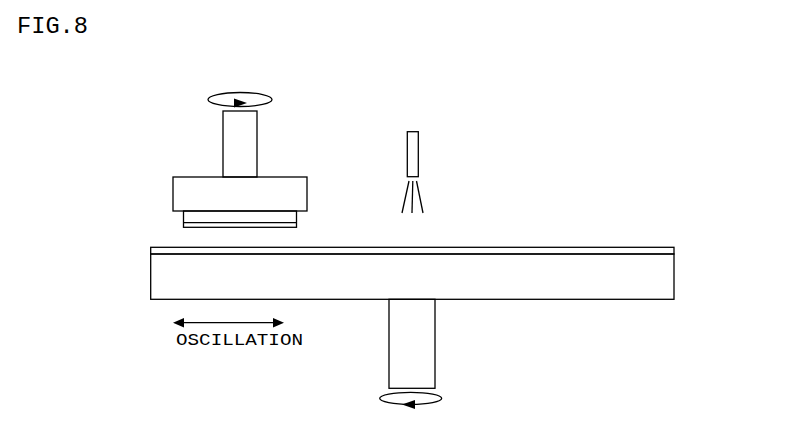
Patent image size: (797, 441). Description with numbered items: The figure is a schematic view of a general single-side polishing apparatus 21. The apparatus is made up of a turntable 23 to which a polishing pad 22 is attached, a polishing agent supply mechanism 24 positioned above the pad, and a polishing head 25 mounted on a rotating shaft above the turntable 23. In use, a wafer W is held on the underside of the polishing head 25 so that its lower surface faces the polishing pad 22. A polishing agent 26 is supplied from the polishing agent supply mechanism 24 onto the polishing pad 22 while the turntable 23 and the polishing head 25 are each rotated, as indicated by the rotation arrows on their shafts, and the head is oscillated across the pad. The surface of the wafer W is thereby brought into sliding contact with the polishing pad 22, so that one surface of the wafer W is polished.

The single-side polishing apparatus 21 is at (158, 86).
The polishing pad 22 is at (659, 251).
The turntable 23 is at (655, 279).
The polishing agent supply mechanism 24 is at (413, 155).
The polishing head 25 is at (155, 168).
The polishing agent 26 is at (433, 197).
The wafer W is at (193, 224).